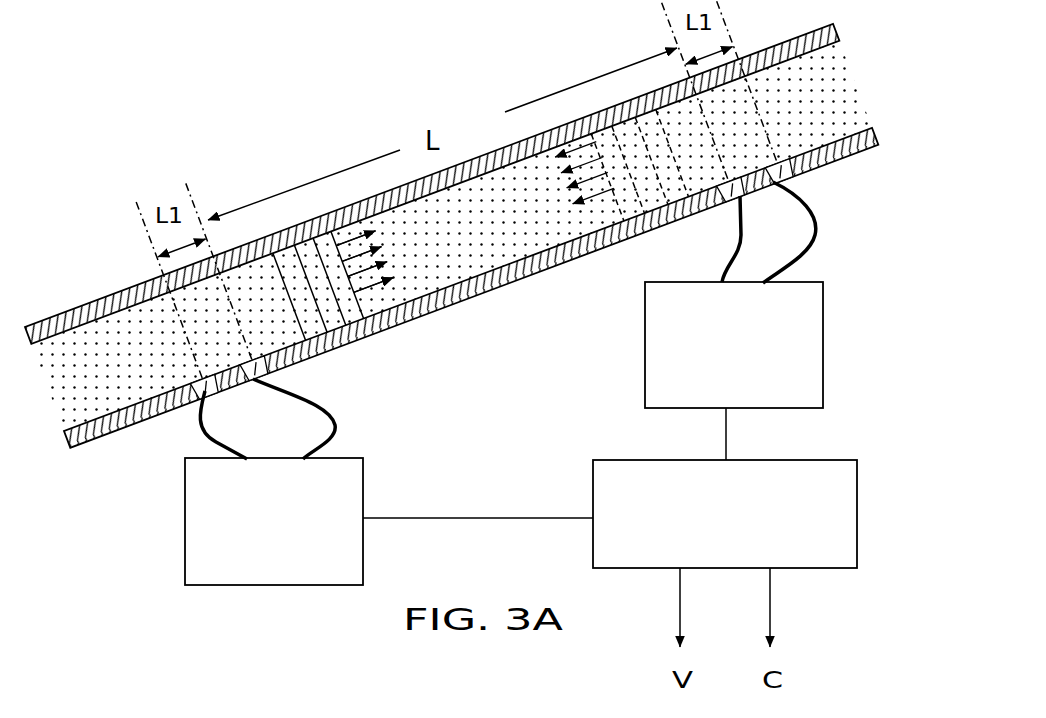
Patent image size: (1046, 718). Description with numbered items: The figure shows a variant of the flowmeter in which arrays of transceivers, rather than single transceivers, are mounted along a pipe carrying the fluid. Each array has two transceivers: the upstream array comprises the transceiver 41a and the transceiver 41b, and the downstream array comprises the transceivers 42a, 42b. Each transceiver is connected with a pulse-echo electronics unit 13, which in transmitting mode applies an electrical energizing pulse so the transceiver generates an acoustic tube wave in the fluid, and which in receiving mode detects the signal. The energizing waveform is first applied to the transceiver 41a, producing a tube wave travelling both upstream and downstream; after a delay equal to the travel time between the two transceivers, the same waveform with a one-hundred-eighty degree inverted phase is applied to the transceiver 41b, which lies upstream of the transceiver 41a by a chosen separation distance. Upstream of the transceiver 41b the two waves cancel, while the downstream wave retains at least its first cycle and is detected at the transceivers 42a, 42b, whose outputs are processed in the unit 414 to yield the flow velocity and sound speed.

The pulse-echo electronics unit 13 is at (334, 579).
The transceiver 41a is at (266, 366).
The transceiver 41b is at (204, 385).
The transceiver 42a is at (714, 219).
The transceiver 42b is at (787, 172).
The signal processing unit 414 is at (626, 561).